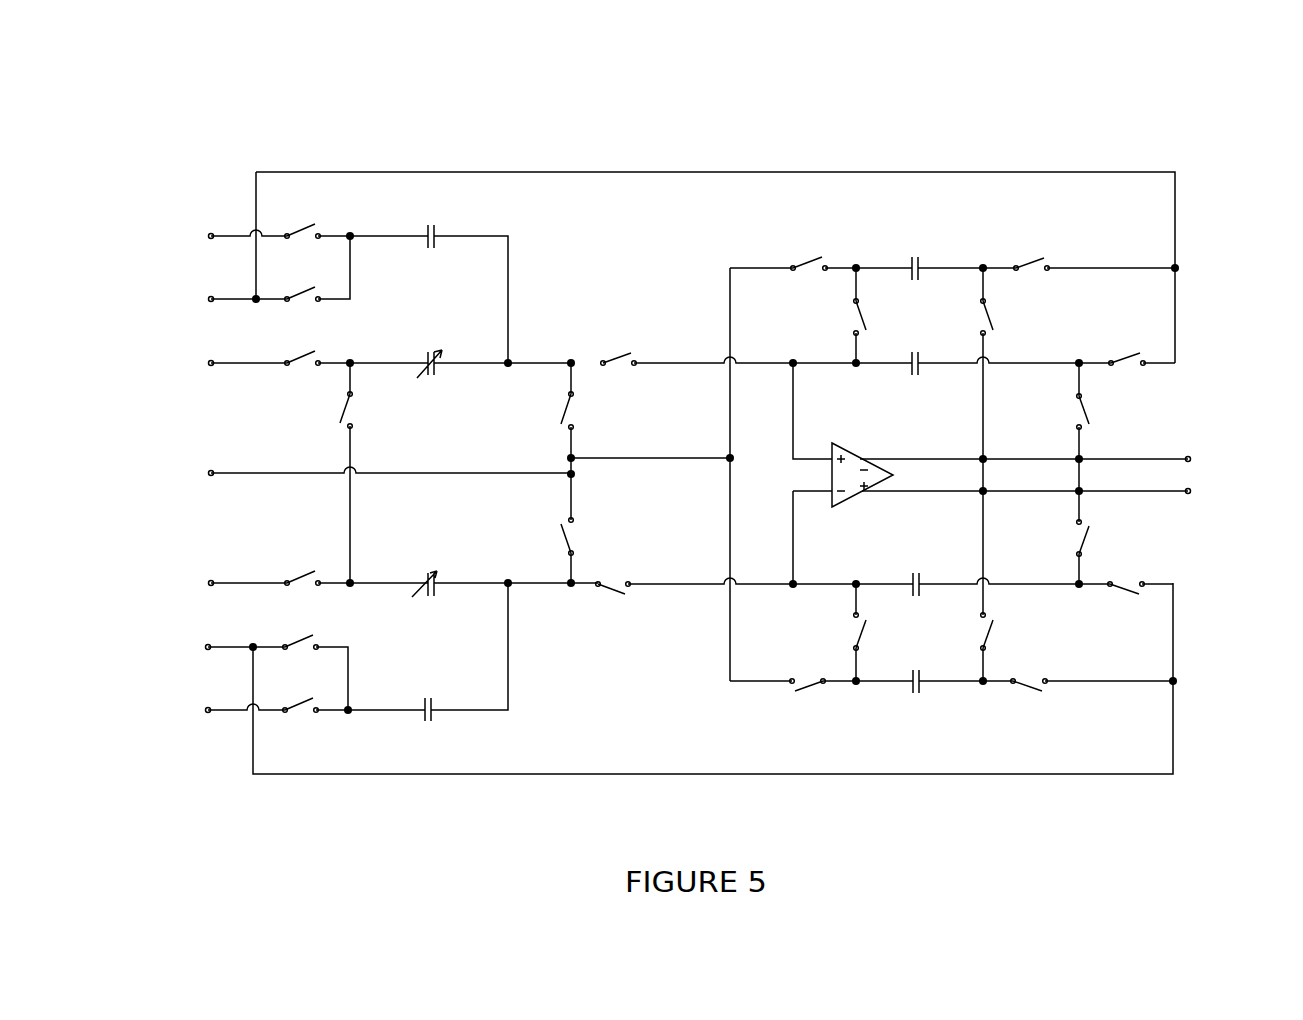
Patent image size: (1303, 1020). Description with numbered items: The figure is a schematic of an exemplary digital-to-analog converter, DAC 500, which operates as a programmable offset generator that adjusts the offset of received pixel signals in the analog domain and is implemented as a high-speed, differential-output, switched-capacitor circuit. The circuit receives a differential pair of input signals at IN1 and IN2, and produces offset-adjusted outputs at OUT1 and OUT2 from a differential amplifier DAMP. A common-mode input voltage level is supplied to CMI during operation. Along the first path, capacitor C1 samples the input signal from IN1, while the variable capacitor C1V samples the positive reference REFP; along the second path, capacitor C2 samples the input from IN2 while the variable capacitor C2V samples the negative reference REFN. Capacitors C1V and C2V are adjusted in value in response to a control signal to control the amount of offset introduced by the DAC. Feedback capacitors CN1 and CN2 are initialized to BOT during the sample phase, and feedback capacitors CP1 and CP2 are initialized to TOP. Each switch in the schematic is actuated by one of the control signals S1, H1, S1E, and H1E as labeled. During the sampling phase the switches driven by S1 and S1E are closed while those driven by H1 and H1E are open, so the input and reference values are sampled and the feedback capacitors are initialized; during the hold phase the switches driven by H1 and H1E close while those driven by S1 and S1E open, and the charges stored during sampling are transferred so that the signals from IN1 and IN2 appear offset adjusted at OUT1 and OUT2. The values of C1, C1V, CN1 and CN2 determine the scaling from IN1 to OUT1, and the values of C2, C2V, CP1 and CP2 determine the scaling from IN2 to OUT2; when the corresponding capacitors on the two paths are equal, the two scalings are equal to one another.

The digital-to-analog converter (DAC) 500 is at (182, 136).
The capacitor C1 is at (431, 226).
The capacitor C1V is at (432, 355).
The capacitor C2 is at (427, 699).
The capacitor C2V is at (429, 574).
The capacitor CN1 is at (915, 257).
The capacitor CN2 is at (915, 352).
The capacitor CP1 is at (914, 692).
The capacitor CP2 is at (913, 595).
The differential amplifier DAMP is at (853, 508).
The switch control signal S1 is at (714, 481).
The switch control signal H1 is at (686, 474).
The switch control signal S1E is at (713, 475).
The switch control signal H1E is at (712, 474).
The input IN1 is at (187, 236).
The input IN2 is at (185, 710).
The initialization voltage BOT is at (183, 299).
The initialization voltage TOP is at (182, 647).
The reference voltage REFP is at (181, 363).
The reference voltage REFN is at (180, 583).
The common-mode input CMI is at (184, 473).
The output OUT1 is at (1220, 460).
The output OUT2 is at (1220, 492).